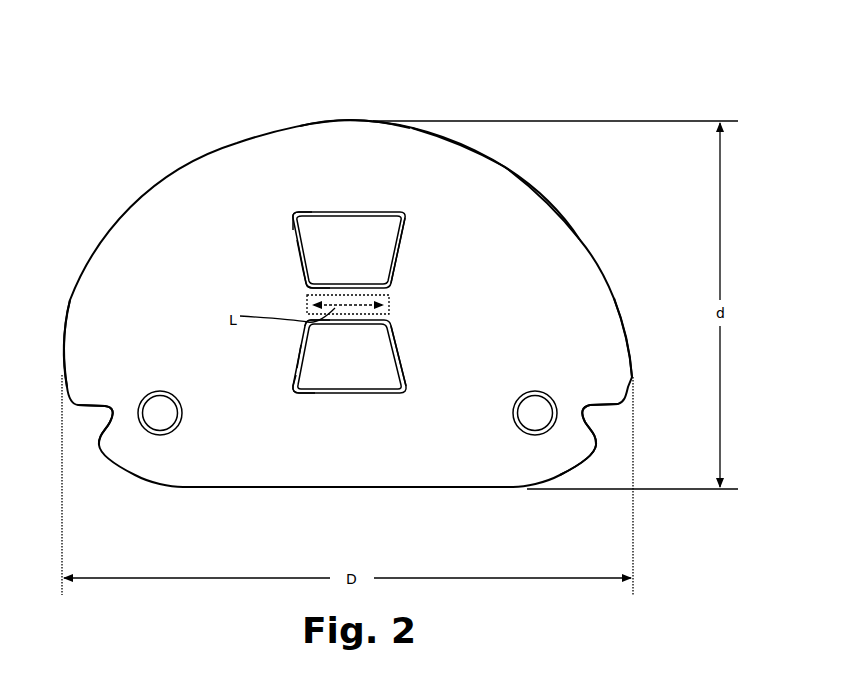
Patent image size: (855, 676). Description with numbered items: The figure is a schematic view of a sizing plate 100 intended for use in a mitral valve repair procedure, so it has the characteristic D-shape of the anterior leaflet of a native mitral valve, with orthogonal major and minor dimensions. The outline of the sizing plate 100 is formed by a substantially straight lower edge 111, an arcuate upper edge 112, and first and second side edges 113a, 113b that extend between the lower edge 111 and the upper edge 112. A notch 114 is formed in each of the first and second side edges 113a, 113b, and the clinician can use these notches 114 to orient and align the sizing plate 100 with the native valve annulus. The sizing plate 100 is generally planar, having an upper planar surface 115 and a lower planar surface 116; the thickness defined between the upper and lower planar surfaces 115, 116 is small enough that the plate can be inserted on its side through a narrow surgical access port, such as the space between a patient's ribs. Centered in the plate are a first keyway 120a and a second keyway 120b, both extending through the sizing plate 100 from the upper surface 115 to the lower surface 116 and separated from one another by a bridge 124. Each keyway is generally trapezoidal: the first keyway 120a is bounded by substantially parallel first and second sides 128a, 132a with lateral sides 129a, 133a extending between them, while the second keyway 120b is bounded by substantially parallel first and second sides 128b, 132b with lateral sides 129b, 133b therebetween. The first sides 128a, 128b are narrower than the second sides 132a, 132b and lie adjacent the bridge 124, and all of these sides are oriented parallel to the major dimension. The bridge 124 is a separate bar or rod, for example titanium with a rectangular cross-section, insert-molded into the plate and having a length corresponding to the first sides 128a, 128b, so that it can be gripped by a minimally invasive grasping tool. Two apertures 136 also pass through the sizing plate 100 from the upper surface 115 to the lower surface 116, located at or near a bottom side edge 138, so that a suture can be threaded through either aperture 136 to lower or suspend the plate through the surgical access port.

The sizing plate 100 is at (256, 90).
The substantially straight lower edge 111 is at (227, 488).
The arcuate upper edge 112 is at (374, 120).
The first side edge 113a is at (65, 389).
The second side edge 113b is at (633, 388).
The notch 114 is at (97, 417).
The upper planar surface 115 is at (463, 160).
The lower planar surface 116 is at (520, 173).
The first keyway 120a is at (404, 212).
The second keyway 120b is at (390, 397).
The bridge 124 is at (388, 313).
The first side of first keyway 128a is at (330, 287).
The first side of second keyway 128b is at (343, 334).
The lateral side of first keyway 129a is at (297, 257).
The lateral side of second keyway 129b is at (293, 383).
The second side of first keyway 132a is at (310, 216).
The second side of second keyway 132b is at (333, 397).
The lateral side of first keyway 133a is at (400, 250).
The lateral side of second keyway 133b is at (397, 348).
The aperture 136 is at (142, 431).
The bottom side edge 138 is at (588, 455).